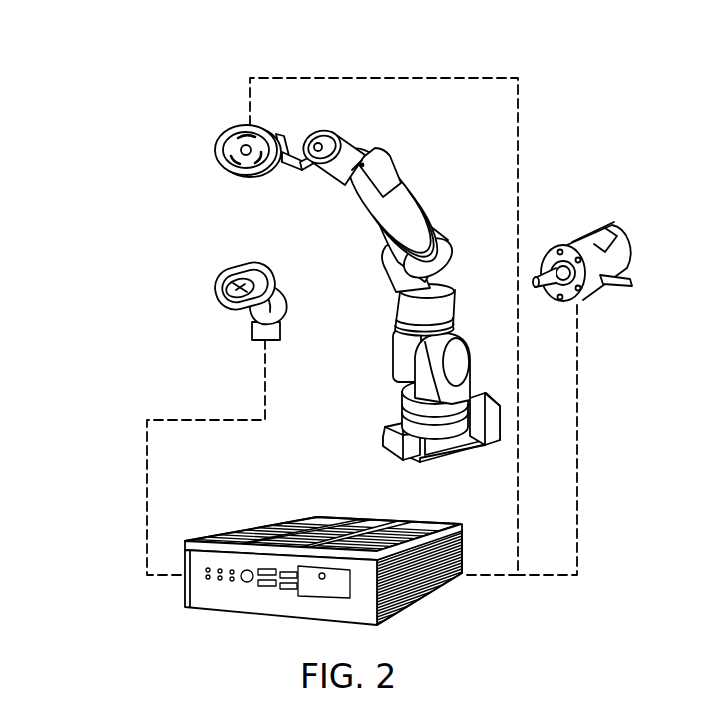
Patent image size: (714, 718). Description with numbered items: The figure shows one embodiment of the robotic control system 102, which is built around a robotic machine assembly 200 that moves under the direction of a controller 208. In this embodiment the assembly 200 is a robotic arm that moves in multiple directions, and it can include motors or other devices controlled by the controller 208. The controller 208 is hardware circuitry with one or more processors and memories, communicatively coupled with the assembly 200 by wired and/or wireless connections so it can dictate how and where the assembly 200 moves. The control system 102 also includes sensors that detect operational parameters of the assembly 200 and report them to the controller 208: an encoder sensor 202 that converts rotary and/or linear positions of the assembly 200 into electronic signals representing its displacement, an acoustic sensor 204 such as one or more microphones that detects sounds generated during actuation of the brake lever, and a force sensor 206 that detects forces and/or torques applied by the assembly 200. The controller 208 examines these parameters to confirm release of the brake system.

The robotic control system 102 is at (136, 62).
The robotic machine assembly 200 is at (388, 170).
The encoder sensor 202 is at (608, 236).
The acoustic sensor 204 is at (295, 320).
The force sensor 206 is at (233, 178).
The controller 208 is at (408, 612).